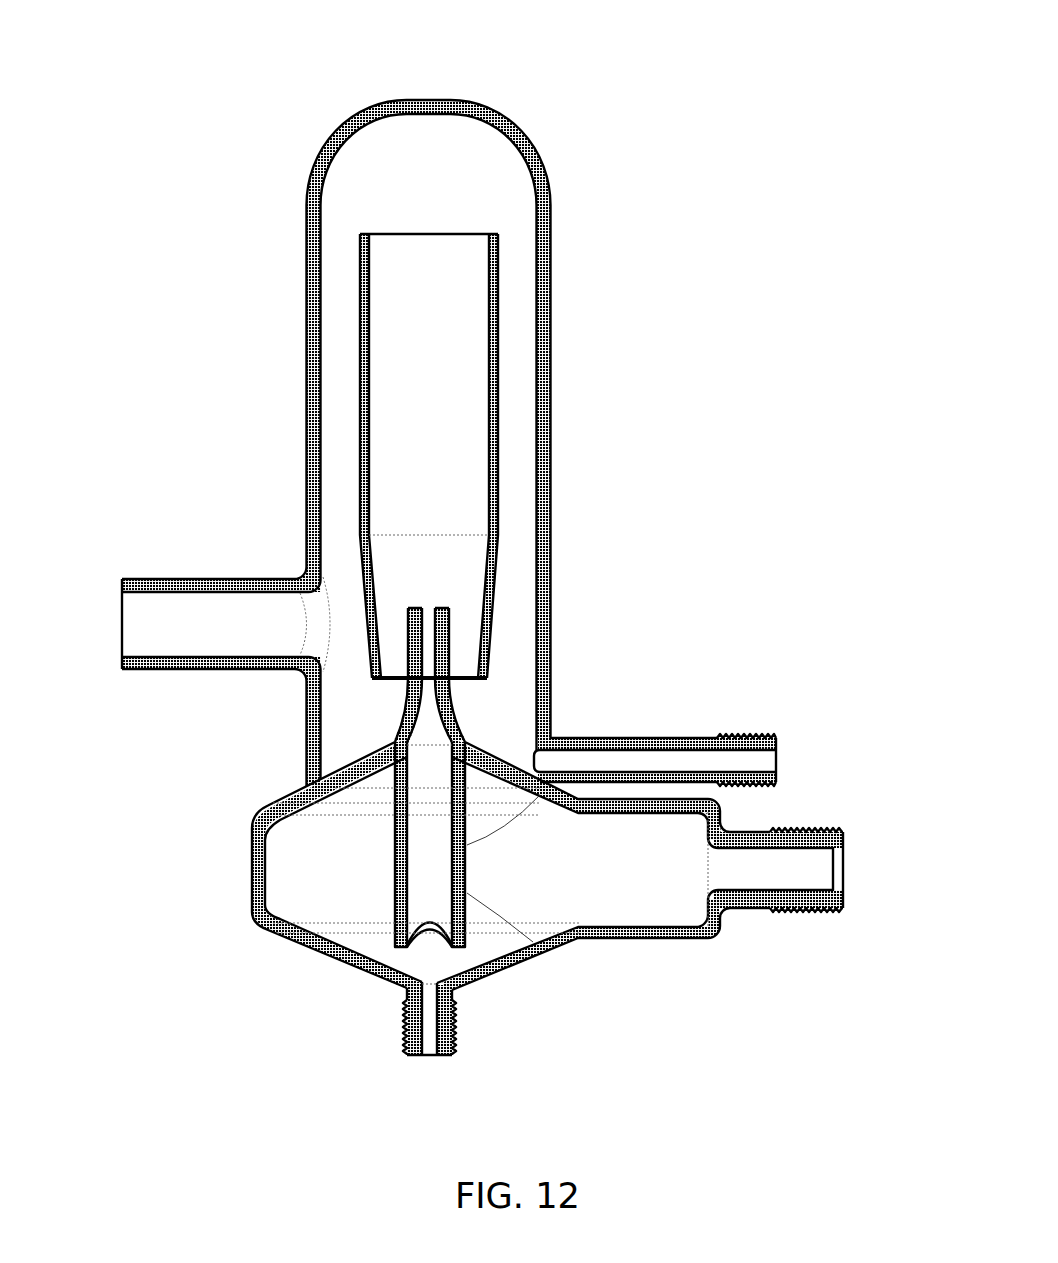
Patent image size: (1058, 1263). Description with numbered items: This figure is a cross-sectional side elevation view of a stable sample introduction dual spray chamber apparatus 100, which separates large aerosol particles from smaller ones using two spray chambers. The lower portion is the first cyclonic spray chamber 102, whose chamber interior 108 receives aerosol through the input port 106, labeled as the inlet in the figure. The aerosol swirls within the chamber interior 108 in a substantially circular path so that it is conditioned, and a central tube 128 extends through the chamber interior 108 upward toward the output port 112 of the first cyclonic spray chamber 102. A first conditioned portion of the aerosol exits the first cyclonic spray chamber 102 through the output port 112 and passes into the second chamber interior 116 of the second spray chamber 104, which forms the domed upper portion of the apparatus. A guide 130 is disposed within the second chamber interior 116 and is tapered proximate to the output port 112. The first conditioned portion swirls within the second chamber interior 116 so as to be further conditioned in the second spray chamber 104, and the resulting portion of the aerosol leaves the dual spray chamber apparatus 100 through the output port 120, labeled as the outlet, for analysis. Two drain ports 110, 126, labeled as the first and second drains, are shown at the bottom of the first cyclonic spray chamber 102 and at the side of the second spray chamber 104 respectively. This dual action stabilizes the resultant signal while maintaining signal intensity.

The dual spray chamber apparatus 100 is at (709, 123).
The first cyclonic spray chamber 102 is at (487, 747).
The second spray chamber 104 is at (429, 100).
The inlet port 106 is at (828, 830).
The chamber interior 108 is at (295, 883).
The first drain port 110 is at (415, 1045).
The output port 112 is at (447, 652).
The second chamber interior 116 is at (515, 320).
The output port 120 is at (150, 587).
The second drain port 126 is at (745, 737).
The central tube 128 is at (400, 792).
The guide 130 is at (499, 453).